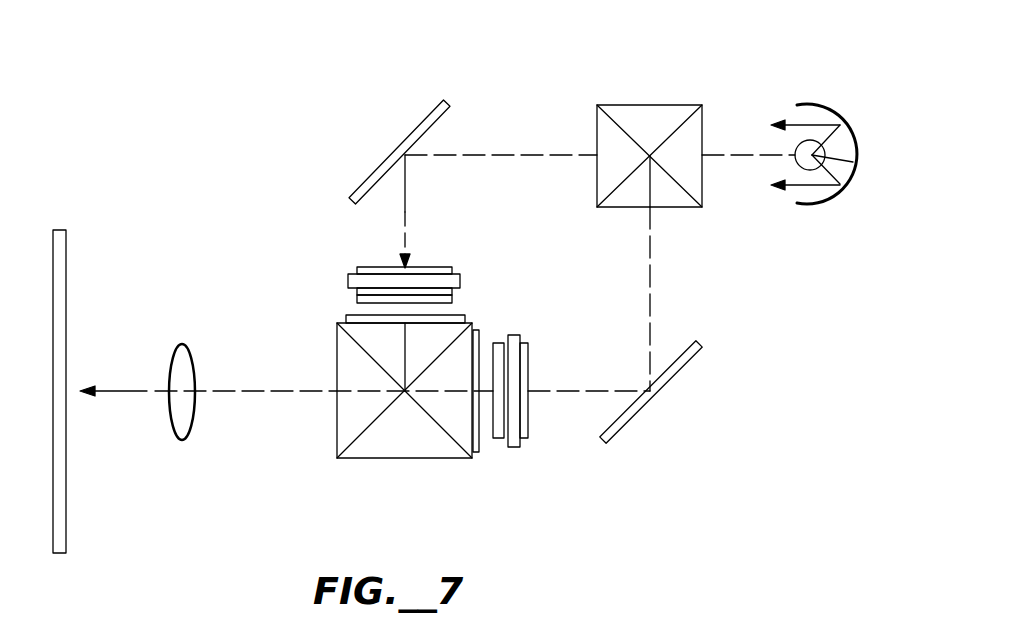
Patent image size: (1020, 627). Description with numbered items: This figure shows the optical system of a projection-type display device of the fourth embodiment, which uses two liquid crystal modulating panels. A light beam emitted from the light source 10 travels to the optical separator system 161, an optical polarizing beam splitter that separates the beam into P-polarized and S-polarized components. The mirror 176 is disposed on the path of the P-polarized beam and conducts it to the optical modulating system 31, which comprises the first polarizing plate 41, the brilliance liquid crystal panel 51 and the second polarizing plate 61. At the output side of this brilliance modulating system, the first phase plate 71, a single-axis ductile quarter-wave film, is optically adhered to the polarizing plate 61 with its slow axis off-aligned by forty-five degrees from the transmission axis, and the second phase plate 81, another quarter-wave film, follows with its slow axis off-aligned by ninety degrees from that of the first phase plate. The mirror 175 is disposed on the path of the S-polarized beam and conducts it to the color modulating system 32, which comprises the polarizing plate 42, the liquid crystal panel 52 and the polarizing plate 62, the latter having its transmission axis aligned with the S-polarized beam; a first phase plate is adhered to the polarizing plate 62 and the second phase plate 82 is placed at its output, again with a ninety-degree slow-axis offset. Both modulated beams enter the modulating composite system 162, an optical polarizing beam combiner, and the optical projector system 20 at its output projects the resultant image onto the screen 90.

The light source 10 is at (857, 158).
The optical projector system 20 is at (195, 356).
The optical modulating system 31 is at (402, 260).
The color modulating system 32 is at (549, 411).
The first polarizing plate 41 is at (447, 267).
The polarizing plate 42 is at (528, 369).
The brilliance liquid crystal panel 51 is at (357, 280).
The liquid crystal panel 52 is at (520, 338).
The second polarizing plate 61 is at (452, 290).
The polarizing plate 62 is at (503, 343).
The first phase plate 71 is at (452, 299).
The second phase plate 81 is at (345, 318).
The second phase plate 82 is at (477, 458).
The screen 90 is at (66, 297).
The optical separator system 161 is at (658, 105).
The modulating composite system 162 is at (396, 447).
The mirror 175 is at (643, 418).
The mirror 176 is at (410, 130).